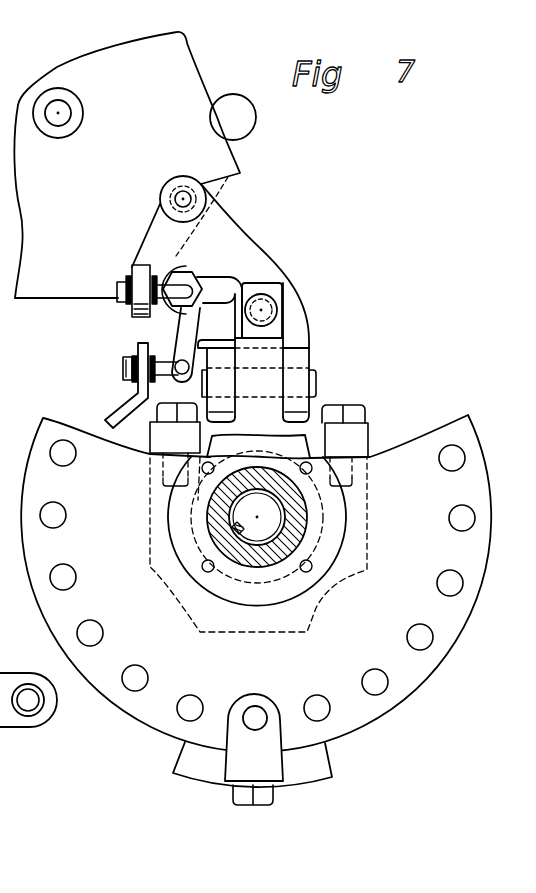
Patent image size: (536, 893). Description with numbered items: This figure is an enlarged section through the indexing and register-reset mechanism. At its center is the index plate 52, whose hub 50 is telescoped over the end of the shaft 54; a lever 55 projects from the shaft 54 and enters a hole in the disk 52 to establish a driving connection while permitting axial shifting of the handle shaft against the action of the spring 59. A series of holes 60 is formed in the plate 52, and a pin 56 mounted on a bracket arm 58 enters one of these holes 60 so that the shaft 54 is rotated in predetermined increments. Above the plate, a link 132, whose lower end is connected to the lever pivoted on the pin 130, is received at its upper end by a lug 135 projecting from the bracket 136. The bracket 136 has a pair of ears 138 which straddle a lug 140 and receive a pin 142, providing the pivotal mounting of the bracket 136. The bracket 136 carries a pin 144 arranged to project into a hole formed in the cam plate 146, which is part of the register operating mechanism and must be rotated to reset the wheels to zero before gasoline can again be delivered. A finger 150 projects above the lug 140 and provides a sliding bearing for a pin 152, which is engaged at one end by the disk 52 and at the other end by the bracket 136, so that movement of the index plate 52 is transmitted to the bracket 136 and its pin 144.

The cam plate 146 is at (233, 157).
The pin 144 is at (190, 198).
The bracket 136 is at (250, 238).
The lug 135 is at (176, 250).
The finger 150 is at (262, 283).
The pin 152 is at (277, 302).
The ears 138 is at (298, 345).
The lug 140 is at (290, 362).
The pin 142 is at (318, 384).
The link 132 is at (125, 360).
The pin 130 is at (122, 411).
The lever 55 is at (240, 436).
The shaft 54 is at (268, 511).
The hub 50 is at (284, 535).
The spring 59 is at (258, 538).
The index plate 52 is at (479, 618).
The holes 60 is at (375, 670).
The pin 56 is at (263, 700).
The bracket arm 58 is at (287, 773).